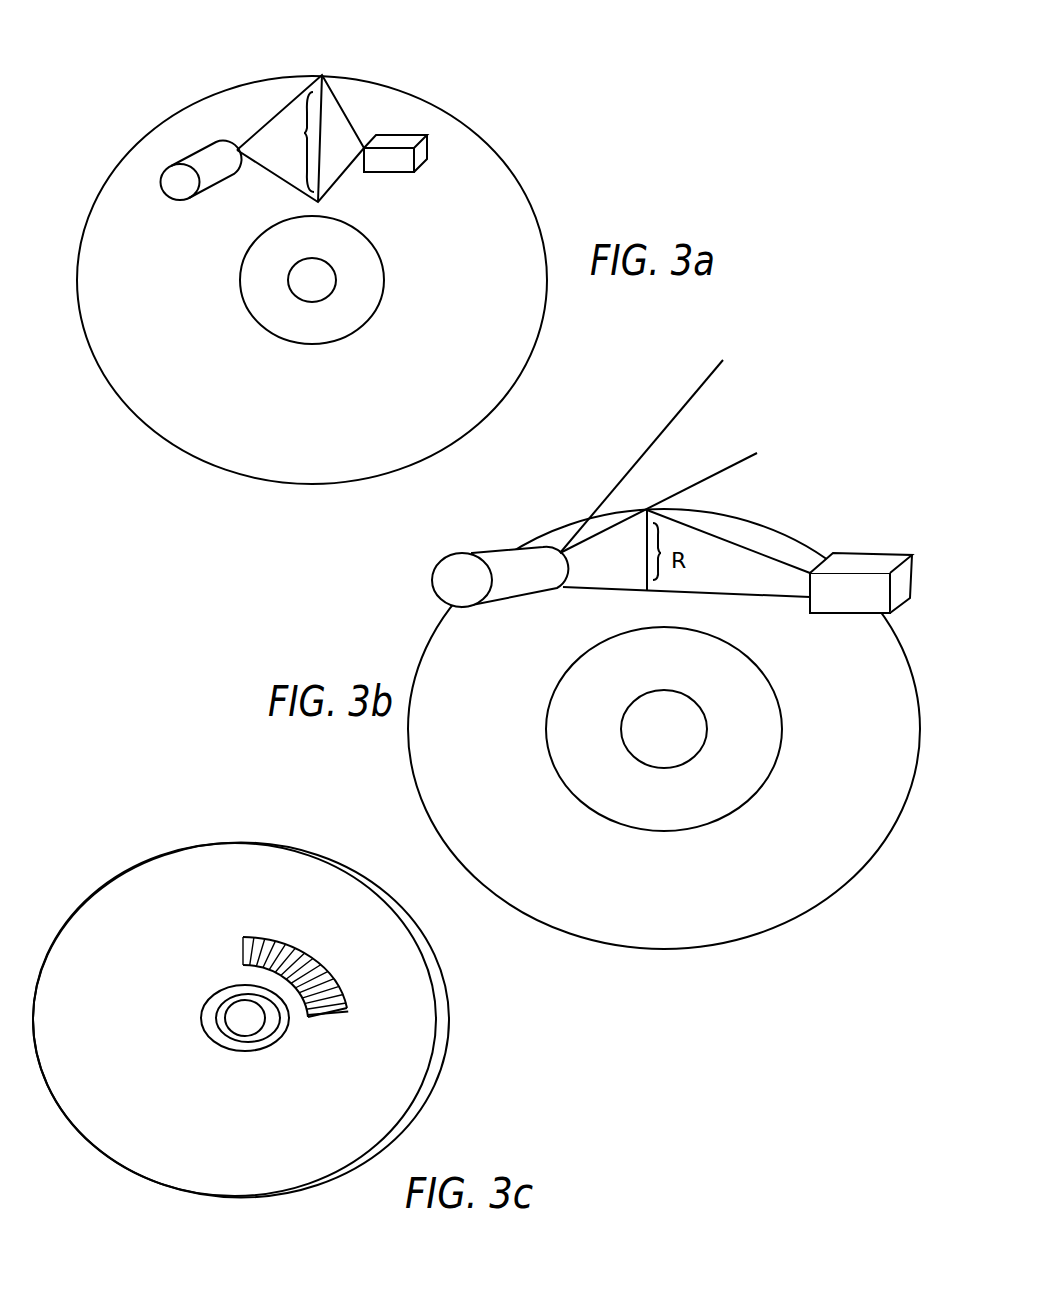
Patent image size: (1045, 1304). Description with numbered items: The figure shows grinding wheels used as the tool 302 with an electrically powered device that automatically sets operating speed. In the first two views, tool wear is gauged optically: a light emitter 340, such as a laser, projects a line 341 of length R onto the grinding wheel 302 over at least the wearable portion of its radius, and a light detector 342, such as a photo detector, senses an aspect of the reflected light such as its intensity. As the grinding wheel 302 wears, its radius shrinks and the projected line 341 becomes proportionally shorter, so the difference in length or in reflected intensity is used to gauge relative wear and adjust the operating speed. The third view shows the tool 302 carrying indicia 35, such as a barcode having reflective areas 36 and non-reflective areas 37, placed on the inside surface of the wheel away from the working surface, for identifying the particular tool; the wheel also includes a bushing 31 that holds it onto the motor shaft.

In FIG. 3a, the tool 302 is at (533, 361).
In FIG. 3c, the tool 302 is at (449, 1009).
In FIG. 3a, the light emitter 340 is at (222, 143).
In FIG. 3a, the line 341 is at (320, 126).
In FIG. 3a, the light detector 342 is at (407, 136).
In FIG. 3c, the bushing 31 is at (247, 1050).
In FIG. 3c, the indicia 35 is at (307, 950).
In FIG. 3c, the reflective areas 36 is at (343, 1002).
In FIG. 3c, the non-reflective areas 37 is at (333, 1012).